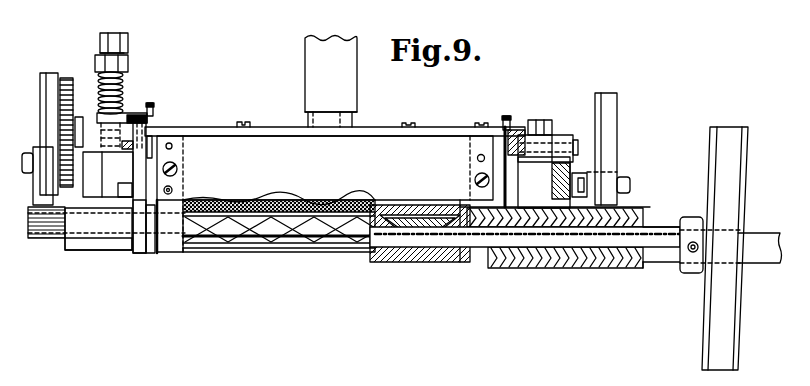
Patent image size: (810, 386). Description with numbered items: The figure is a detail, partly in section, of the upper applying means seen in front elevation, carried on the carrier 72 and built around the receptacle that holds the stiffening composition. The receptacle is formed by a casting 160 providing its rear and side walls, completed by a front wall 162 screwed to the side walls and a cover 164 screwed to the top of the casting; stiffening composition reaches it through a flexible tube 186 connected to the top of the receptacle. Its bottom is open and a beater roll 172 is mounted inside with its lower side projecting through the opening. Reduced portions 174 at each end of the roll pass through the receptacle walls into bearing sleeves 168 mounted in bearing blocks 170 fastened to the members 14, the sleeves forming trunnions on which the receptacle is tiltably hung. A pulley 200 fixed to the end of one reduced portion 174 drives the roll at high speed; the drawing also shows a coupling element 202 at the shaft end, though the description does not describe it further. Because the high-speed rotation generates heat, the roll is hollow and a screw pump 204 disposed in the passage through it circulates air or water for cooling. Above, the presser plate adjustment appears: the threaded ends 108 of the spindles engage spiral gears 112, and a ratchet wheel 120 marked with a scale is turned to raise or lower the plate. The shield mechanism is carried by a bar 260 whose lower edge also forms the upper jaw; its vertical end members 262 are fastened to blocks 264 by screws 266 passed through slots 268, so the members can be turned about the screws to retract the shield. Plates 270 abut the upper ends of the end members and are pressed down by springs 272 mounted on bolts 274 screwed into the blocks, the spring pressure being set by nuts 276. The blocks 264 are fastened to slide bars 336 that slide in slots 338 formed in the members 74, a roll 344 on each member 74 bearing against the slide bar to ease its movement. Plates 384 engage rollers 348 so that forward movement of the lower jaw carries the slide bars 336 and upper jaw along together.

The members 14 is at (373, 151).
The carrier 72 is at (92, 257).
The members 74 is at (544, 182).
The threaded ends 108 is at (153, 110).
The spiral gears 112 is at (517, 130).
The ratchet wheel 120 is at (68, 85).
The casting 160 is at (188, 149).
The front wall 162 is at (331, 190).
The cover 164 is at (438, 124).
The bearing sleeves 168 is at (480, 276).
The bearing blocks 170 is at (74, 250).
The beater roll 172 is at (261, 252).
The reduced portions 174 is at (660, 265).
The flexible tube 186 is at (349, 103).
The pulley 200 is at (748, 191).
The coupling 202 is at (654, 231).
The screw pump 204 is at (418, 248).
The bar 260 is at (144, 254).
The vertical end members 262 is at (136, 252).
The blocks 264 is at (108, 174).
The screws 266 is at (148, 147).
The slots 268 is at (186, 182).
The plates 270 is at (133, 115).
The springs 272 is at (122, 83).
The bolts 274 is at (123, 52).
The nuts 276 is at (97, 55).
The slide bars 336 is at (620, 150).
The slots 338 is at (547, 182).
The roll 344 is at (560, 131).
The rollers 348 is at (35, 236).
The plates 384 is at (43, 82).